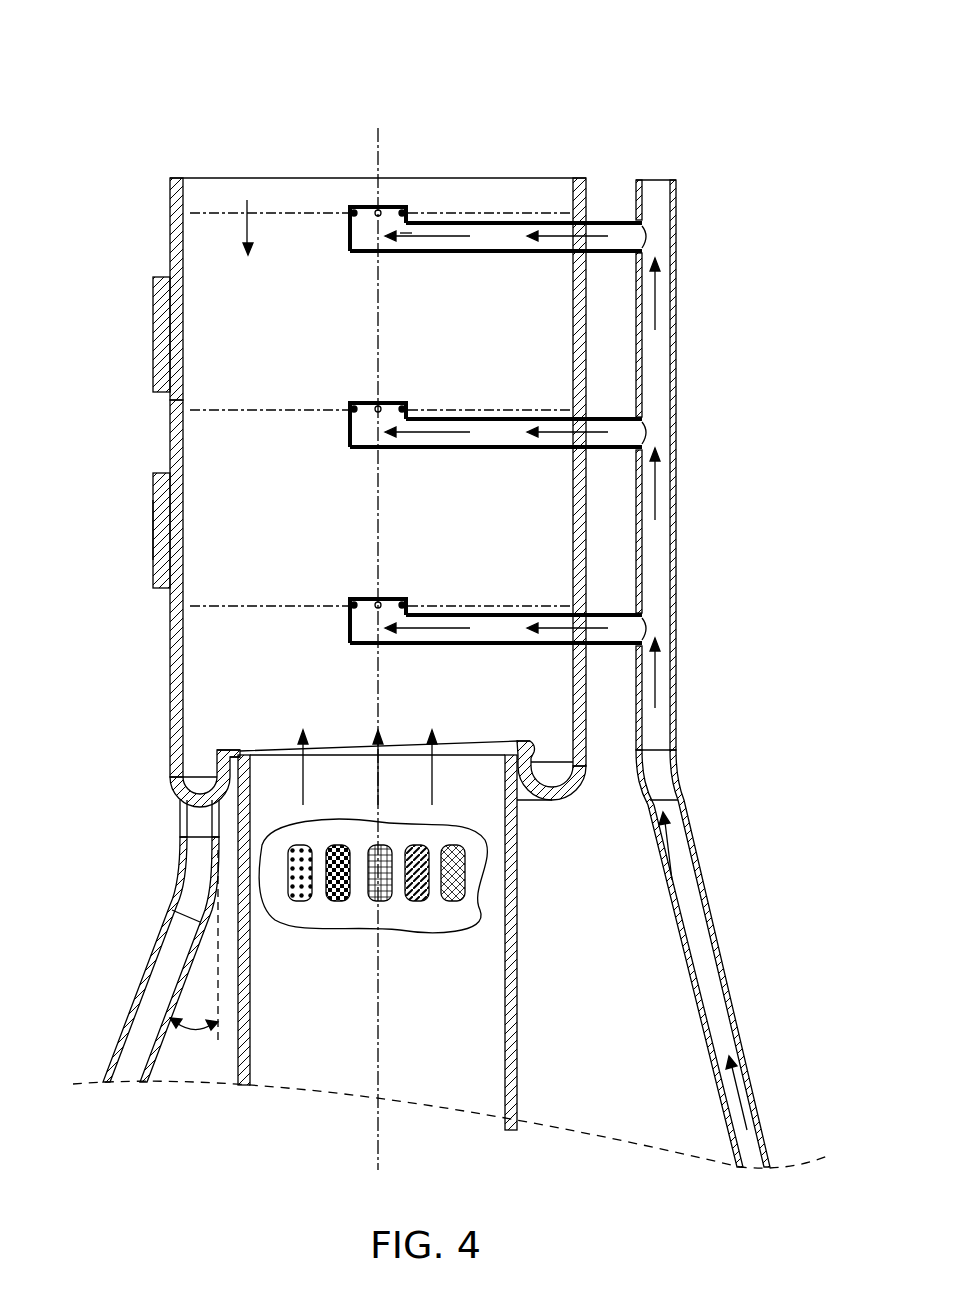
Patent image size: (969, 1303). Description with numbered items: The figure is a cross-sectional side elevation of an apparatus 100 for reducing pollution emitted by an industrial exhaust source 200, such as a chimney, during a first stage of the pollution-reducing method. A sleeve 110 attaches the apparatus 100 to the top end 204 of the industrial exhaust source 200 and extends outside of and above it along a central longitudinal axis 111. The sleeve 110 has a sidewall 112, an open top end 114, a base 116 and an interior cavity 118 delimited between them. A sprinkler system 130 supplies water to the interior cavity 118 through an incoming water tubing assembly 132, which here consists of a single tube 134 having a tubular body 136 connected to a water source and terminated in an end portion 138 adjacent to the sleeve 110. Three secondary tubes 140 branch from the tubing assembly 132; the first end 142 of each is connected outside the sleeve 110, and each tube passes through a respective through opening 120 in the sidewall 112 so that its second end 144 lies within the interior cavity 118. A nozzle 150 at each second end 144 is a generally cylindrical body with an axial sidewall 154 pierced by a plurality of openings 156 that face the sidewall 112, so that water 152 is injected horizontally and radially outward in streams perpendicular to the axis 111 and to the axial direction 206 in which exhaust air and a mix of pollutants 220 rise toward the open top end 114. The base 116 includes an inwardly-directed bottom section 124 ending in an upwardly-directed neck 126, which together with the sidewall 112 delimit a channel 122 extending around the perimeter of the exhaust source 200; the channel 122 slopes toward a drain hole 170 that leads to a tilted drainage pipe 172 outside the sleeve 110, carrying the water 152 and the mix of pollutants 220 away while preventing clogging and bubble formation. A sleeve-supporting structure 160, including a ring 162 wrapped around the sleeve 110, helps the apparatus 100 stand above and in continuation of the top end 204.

The apparatus 100 is at (100, 42).
The sleeve 110 is at (170, 240).
The central longitudinal axis 111 is at (380, 137).
The sidewall 112 is at (170, 437).
The open top end 114 is at (170, 178).
The base 116 is at (577, 788).
The interior cavity 118 is at (244, 200).
The through opening 120 is at (598, 192).
The channel 122 is at (195, 785).
The bottom section 124 is at (560, 800).
The neck 126 is at (233, 750).
The sprinkler system 130 is at (692, 296).
The incoming water tubing assembly 132 is at (676, 358).
The tube 134 is at (700, 872).
The tubular body 136 is at (723, 968).
The end portion 138 is at (676, 490).
The secondary tube 140 is at (452, 255).
The first end 142 is at (645, 232).
The second end 144 is at (412, 232).
The nozzle 150 is at (348, 248).
The water 152 is at (190, 213).
The sidewall 154 is at (348, 225).
The openings 156 is at (350, 206).
The sleeve-supporting structure 160 is at (145, 520).
The ring 162 is at (153, 322).
The hole 170 is at (190, 812).
The drainage pipe 172 is at (140, 972).
The industrial exhaust source 200 is at (517, 1005).
The top end 204 is at (508, 752).
The axial direction 206 is at (380, 1060).
The mix of pollutants 220 is at (420, 935).